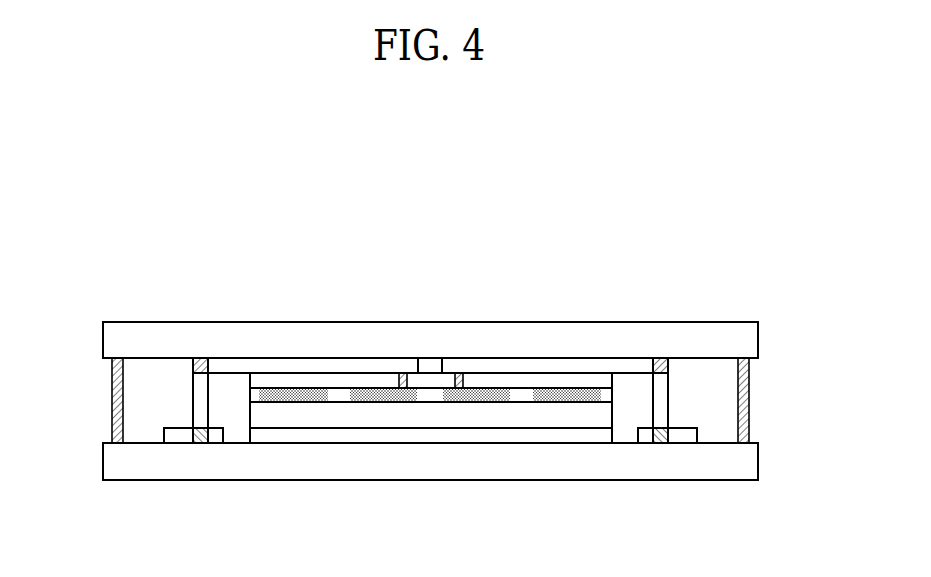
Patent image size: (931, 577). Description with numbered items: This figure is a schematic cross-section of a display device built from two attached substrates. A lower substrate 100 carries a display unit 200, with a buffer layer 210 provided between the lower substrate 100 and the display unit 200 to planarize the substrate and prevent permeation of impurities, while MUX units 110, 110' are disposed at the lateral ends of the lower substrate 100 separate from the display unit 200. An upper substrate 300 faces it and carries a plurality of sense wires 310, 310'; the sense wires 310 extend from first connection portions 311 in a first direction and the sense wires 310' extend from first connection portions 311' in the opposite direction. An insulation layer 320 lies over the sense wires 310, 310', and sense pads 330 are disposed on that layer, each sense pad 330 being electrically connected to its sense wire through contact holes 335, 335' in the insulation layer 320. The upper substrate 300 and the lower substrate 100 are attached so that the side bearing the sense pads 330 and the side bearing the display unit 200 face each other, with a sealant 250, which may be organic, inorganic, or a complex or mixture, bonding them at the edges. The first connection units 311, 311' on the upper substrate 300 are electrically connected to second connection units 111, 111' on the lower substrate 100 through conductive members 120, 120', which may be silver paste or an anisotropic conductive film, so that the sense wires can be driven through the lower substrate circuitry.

The lower substrate 100 is at (758, 460).
The MUX unit 110 is at (175, 491).
The MUX unit 110' is at (690, 491).
The second connection unit 111 is at (218, 491).
The second connection unit 111' is at (642, 491).
The conductive member 120 is at (122, 400).
The conductive member 120' is at (740, 400).
The display unit 200 is at (388, 412).
The buffer layer 210 is at (472, 433).
The sealant 250 is at (112, 373).
The upper substrate 300 is at (758, 337).
The sense wire 310 is at (313, 291).
The sense wire 310' is at (547, 307).
The first connection portion 311 is at (201, 313).
The first connection portion 311' is at (664, 313).
The insulation layer 320 is at (530, 383).
The sense pad 330 is at (303, 391).
The contact hole 335 is at (408, 320).
The contact hole 335' is at (480, 320).